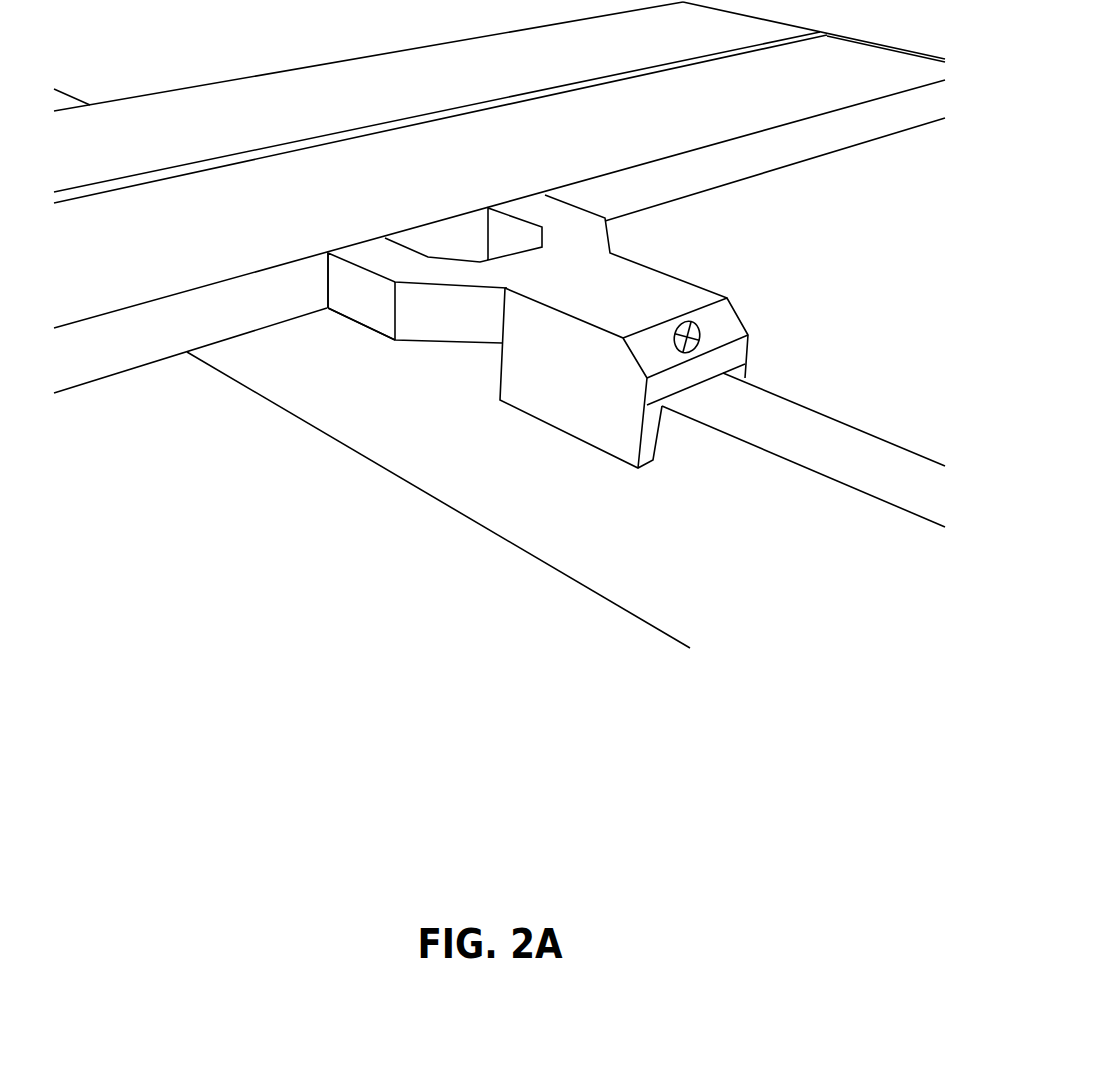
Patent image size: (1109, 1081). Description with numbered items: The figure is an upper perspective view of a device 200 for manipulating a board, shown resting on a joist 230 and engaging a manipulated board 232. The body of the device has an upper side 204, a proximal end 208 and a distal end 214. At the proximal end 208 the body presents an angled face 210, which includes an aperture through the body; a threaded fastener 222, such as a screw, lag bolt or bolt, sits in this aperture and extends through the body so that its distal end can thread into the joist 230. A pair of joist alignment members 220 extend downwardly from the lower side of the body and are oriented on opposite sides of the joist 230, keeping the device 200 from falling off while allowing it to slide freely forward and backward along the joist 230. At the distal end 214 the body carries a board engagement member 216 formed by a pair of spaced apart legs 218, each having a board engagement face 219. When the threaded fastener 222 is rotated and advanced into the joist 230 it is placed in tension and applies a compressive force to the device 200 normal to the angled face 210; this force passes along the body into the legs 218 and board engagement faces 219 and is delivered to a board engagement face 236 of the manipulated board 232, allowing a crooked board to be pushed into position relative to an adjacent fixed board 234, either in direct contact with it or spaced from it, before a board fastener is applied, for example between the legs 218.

The device for manipulating a board 200 is at (760, 235).
The upper side 204 is at (648, 285).
The proximal end 208 is at (820, 271).
The angled face 210 is at (730, 322).
The distal end 214 is at (572, 190).
The board engagement member 216 is at (346, 354).
The spaced apart legs 218 is at (583, 218).
The board engagement face 219 is at (327, 293).
The joist alignment members 220 is at (592, 408).
The threaded fastener 222 is at (688, 355).
The joist 230 is at (817, 423).
The manipulated board 232 is at (259, 213).
The fixed board 234 is at (309, 111).
The board engagement face 236 is at (165, 335).